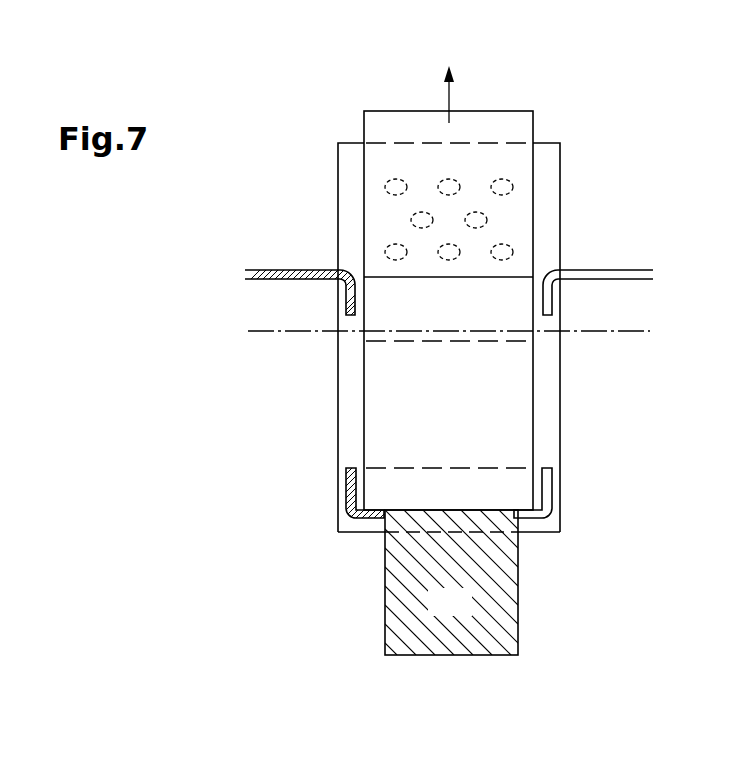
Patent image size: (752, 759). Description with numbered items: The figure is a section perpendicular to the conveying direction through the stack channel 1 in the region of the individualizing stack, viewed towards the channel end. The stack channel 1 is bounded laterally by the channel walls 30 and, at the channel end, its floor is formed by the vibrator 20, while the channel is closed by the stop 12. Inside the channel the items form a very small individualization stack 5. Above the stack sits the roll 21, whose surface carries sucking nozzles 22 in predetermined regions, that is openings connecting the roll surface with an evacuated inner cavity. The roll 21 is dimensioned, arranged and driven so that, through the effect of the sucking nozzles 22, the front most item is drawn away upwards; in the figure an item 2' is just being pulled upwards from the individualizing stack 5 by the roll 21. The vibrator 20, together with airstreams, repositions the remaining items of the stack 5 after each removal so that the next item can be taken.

The stack channel 1 is at (322, 250).
The item 2' is at (458, 285).
The sucking nozzles 22 is at (511, 186).
The roll 21 is at (547, 222).
The lateral channel walls 30 is at (549, 305).
The individualization stack 5 is at (518, 415).
The stop 12 is at (539, 470).
The vibrator 20 is at (436, 611).